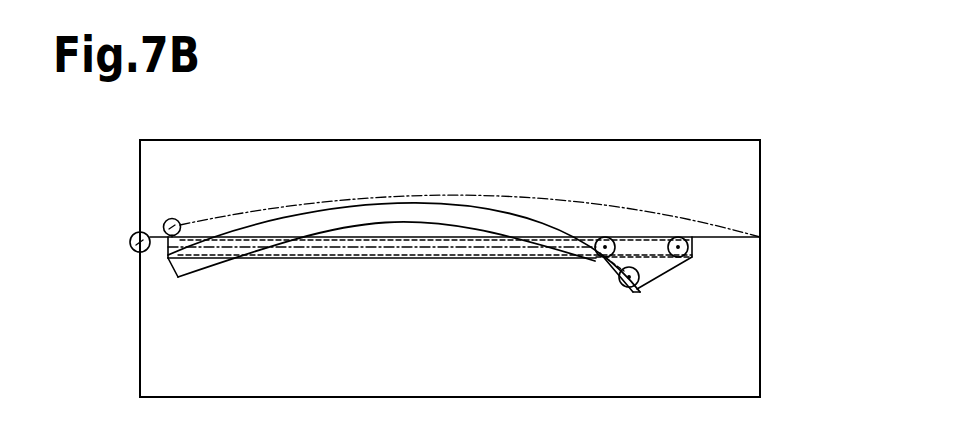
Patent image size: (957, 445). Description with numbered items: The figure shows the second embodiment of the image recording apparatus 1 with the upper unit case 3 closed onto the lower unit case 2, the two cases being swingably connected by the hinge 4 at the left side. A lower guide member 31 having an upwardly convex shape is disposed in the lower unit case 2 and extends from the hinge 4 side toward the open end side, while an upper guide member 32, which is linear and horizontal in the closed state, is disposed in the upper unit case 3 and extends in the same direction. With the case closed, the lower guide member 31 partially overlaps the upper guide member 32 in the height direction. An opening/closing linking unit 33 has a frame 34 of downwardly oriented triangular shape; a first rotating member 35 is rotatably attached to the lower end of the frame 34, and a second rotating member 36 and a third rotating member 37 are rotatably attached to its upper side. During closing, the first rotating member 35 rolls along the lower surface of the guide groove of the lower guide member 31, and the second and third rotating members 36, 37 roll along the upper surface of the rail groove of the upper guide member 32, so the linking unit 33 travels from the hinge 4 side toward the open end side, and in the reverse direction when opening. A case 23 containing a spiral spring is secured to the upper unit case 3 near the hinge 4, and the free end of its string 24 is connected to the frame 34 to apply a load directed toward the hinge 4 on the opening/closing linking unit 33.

The image recording apparatus 1 is at (705, 110).
The lower unit case 2 is at (748, 290).
The upper unit case 3 is at (740, 177).
The hinge 4 is at (131, 249).
The case 23 is at (172, 218).
The string 24 is at (337, 249).
The lower guide member 31 is at (405, 212).
The upper guide member 32 is at (405, 259).
The opening/closing linking unit 33 is at (669, 293).
The frame 34 is at (668, 276).
The first rotating member 35 is at (623, 288).
The second rotating member 36 is at (605, 237).
The third rotating member 37 is at (678, 237).